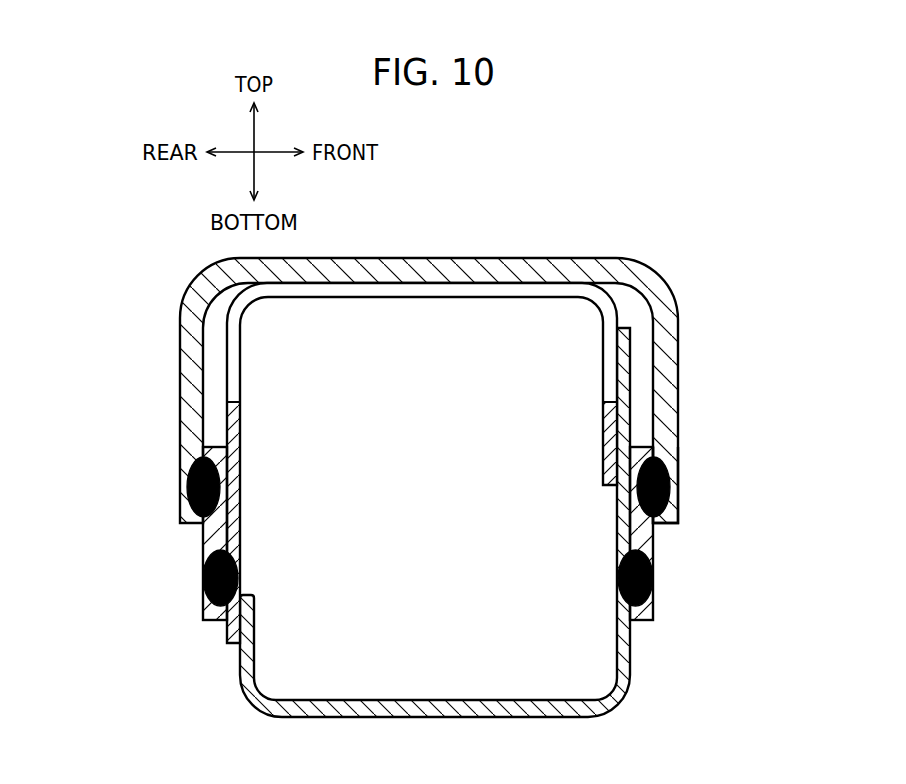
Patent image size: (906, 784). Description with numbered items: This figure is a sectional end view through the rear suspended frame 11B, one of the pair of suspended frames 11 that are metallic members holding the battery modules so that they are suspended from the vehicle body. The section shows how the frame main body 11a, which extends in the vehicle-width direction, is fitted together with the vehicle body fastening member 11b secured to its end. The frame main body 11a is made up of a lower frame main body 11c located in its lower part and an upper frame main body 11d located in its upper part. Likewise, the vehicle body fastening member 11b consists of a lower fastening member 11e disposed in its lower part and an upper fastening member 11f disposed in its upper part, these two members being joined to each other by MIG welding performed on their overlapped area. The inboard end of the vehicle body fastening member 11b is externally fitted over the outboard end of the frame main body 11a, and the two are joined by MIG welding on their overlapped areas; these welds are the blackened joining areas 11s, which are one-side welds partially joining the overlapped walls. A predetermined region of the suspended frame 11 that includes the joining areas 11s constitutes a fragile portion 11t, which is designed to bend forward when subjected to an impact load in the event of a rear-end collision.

The suspended frame 11 is at (441, 432).
The rear suspended frame 11B is at (441, 432).
The frame main body 11a is at (500, 487).
The vehicle body fastening member 11b is at (725, 533).
The lower frame main body 11c is at (632, 375).
The upper frame main body 11d is at (648, 316).
The lower fastening member 11e is at (657, 555).
The upper fastening member 11f is at (677, 452).
The joining area 11s is at (188, 484).
The fragile portion 11t is at (154, 520).